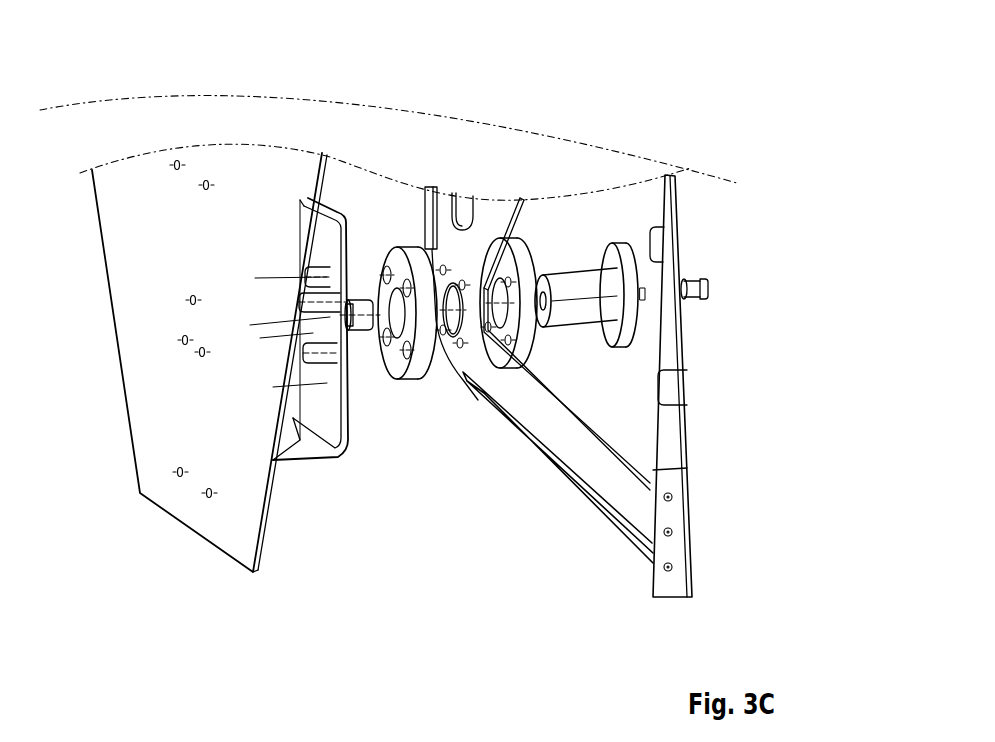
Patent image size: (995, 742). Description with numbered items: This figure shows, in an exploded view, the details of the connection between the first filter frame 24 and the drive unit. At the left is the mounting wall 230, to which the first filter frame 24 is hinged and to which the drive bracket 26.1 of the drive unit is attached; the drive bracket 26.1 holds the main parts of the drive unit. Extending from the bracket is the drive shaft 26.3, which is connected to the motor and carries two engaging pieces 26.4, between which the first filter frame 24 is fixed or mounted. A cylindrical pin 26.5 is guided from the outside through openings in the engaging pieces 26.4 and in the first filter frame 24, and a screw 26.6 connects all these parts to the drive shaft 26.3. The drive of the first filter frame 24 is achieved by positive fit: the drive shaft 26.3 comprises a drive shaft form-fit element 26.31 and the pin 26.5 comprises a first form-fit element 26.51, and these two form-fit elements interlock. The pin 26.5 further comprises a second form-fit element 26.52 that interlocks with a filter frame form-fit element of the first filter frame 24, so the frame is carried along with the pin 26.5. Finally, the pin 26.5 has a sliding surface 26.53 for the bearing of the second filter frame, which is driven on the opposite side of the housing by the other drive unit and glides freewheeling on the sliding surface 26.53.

The mounting wall 230 is at (177, 505).
The drive bracket 26.1 is at (300, 447).
The drive shaft 26.3 is at (365, 325).
The drive shaft form-fit element 26.31 is at (362, 295).
The engaging pieces 26.4 is at (520, 237).
The pin 26.5 is at (578, 332).
The first form-fit element 26.51 is at (541, 275).
The second form-fit element 26.52 is at (542, 327).
The sliding surface 26.53 is at (602, 330).
The screw 26.6 is at (703, 300).
The first filter frame 24 is at (655, 583).